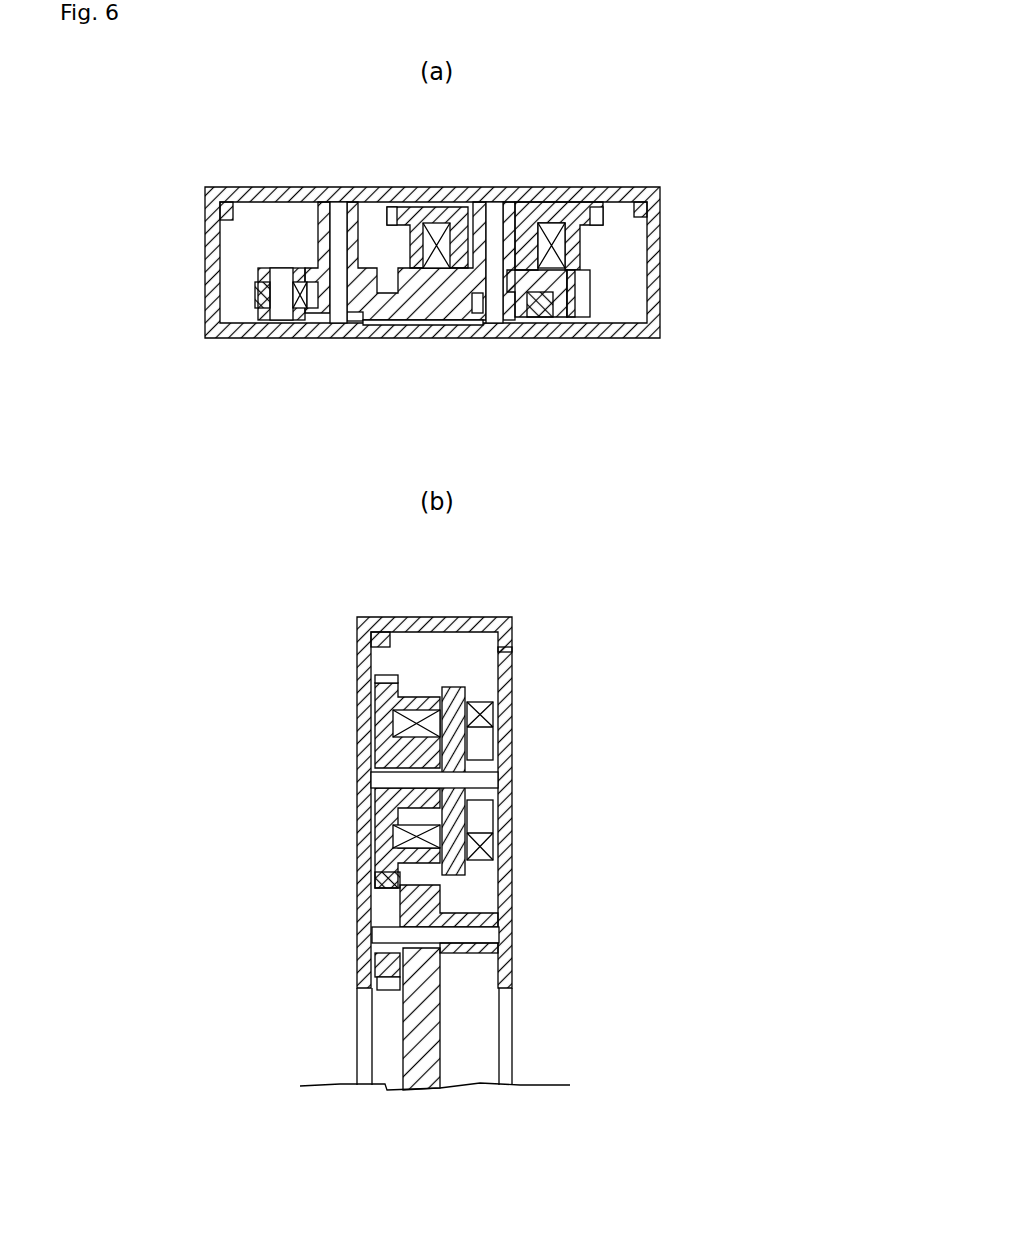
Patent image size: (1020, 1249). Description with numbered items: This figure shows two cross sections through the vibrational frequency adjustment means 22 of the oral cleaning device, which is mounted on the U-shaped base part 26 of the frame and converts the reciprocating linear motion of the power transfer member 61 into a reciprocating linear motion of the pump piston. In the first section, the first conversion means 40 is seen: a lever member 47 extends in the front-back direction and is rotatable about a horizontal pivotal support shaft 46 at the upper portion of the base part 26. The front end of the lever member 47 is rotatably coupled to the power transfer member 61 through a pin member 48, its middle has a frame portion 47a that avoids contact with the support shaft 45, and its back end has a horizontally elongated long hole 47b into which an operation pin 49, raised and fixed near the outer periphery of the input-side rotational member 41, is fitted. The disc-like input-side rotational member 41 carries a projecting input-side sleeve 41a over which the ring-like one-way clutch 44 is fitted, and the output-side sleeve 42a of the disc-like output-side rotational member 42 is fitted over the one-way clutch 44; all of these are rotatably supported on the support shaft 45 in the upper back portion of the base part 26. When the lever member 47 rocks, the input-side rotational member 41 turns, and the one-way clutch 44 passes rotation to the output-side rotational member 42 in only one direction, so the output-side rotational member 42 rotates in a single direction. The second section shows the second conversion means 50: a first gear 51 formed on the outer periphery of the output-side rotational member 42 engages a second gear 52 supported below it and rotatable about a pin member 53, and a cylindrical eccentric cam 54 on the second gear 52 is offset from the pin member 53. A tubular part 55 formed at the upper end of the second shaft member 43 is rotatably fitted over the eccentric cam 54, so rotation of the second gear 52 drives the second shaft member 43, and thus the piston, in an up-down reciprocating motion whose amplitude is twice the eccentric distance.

The vibrational frequency adjustment means 22 is at (268, 224).
The base part 26 is at (655, 287).
The first conversion means 40 is at (349, 340).
The input-side rotational member 41 is at (450, 320).
The input-side sleeve 41a is at (548, 240).
The output-side rotational member 42 is at (413, 215).
The output-side sleeve 42a is at (585, 247).
The second shaft member 43 is at (435, 1030).
The one-way clutch 44 is at (436, 240).
The support shaft 45 is at (493, 215).
The pivotal support shaft 46 is at (337, 217).
The lever member 47 is at (395, 316).
The frame portion 47a is at (480, 712).
The long hole 47b is at (553, 310).
The pin member 48 is at (282, 316).
The operation pin 49 is at (587, 310).
The second conversion means 50 is at (355, 930).
The first gear 51 is at (600, 215).
The second gear 52 is at (388, 995).
The pin member 53 is at (488, 935).
The eccentric cam 54 is at (465, 903).
The tubular part 55 is at (398, 875).
The power transfer member 61 is at (262, 296).